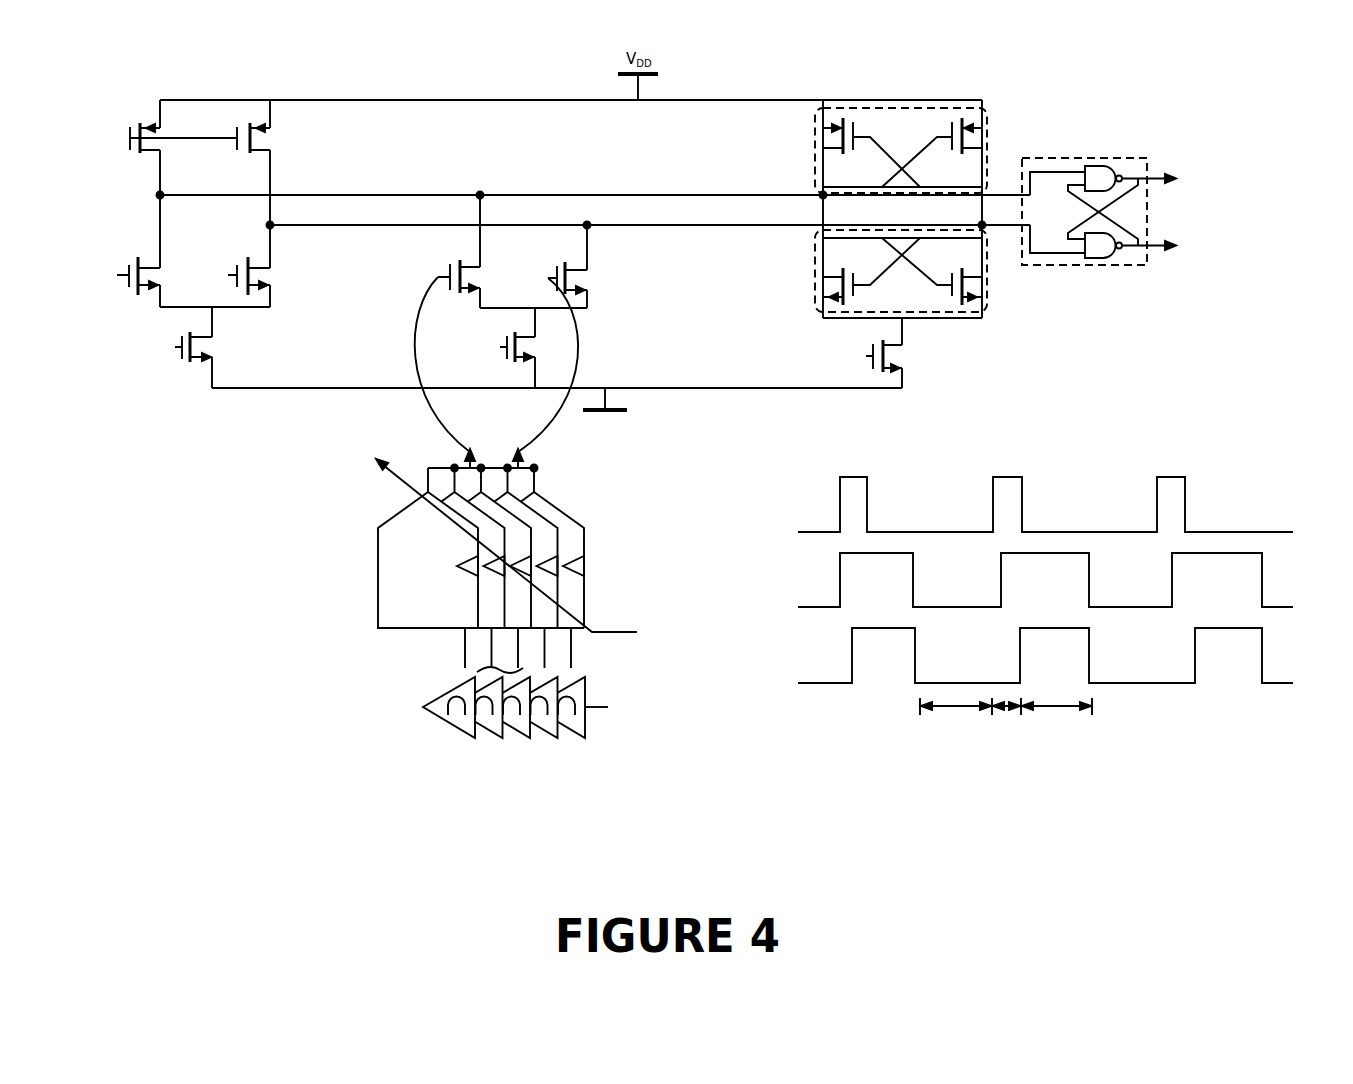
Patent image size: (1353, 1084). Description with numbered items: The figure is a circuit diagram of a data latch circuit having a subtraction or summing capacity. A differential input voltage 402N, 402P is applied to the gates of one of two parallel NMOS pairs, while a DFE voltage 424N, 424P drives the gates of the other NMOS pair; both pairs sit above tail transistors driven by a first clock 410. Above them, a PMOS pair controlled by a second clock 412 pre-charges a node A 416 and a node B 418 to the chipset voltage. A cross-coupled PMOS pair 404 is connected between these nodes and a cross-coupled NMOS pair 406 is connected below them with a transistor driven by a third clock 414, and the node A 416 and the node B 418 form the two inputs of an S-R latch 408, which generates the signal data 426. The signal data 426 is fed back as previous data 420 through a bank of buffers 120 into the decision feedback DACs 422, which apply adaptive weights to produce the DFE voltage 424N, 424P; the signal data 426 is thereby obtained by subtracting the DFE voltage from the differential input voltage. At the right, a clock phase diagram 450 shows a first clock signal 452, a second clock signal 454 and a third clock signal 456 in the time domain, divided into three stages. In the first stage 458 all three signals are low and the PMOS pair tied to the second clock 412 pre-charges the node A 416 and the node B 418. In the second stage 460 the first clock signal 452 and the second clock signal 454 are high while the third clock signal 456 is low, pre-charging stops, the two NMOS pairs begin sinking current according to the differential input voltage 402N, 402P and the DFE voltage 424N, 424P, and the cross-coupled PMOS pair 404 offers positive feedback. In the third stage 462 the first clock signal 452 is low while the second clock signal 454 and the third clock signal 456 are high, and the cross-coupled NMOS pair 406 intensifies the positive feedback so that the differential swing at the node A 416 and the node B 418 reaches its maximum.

The clock 2 412 is at (125, 142).
The differential input voltage 402N is at (228, 275).
The differential input voltage 402P is at (117, 275).
The clock 1 410 is at (178, 350).
The DFE voltage 424P is at (433, 425).
The DFE voltage 424N is at (549, 428).
The node A 416 is at (823, 195).
The node B 418 is at (982, 225).
The cross-coupled PMOS pair 404 is at (919, 110).
The cross-coupled NMOS pair 406 is at (987, 292).
The S-R latch 408 is at (1083, 266).
The signal data 426 is at (1160, 178).
The clock 3 414 is at (860, 358).
The decision feedback DACs 422 is at (366, 493).
The buffer 120 is at (584, 566).
The previous data 420 is at (595, 742).
The clock phase diagram 450 is at (1064, 629).
The clock signal 1 452 is at (1282, 532).
The clock signal 2 454 is at (1282, 607).
The clock signal 3 456 is at (1282, 683).
The stage 1 458 is at (957, 708).
The stage 2 460 is at (1008, 708).
The stage 3 462 is at (1057, 708).